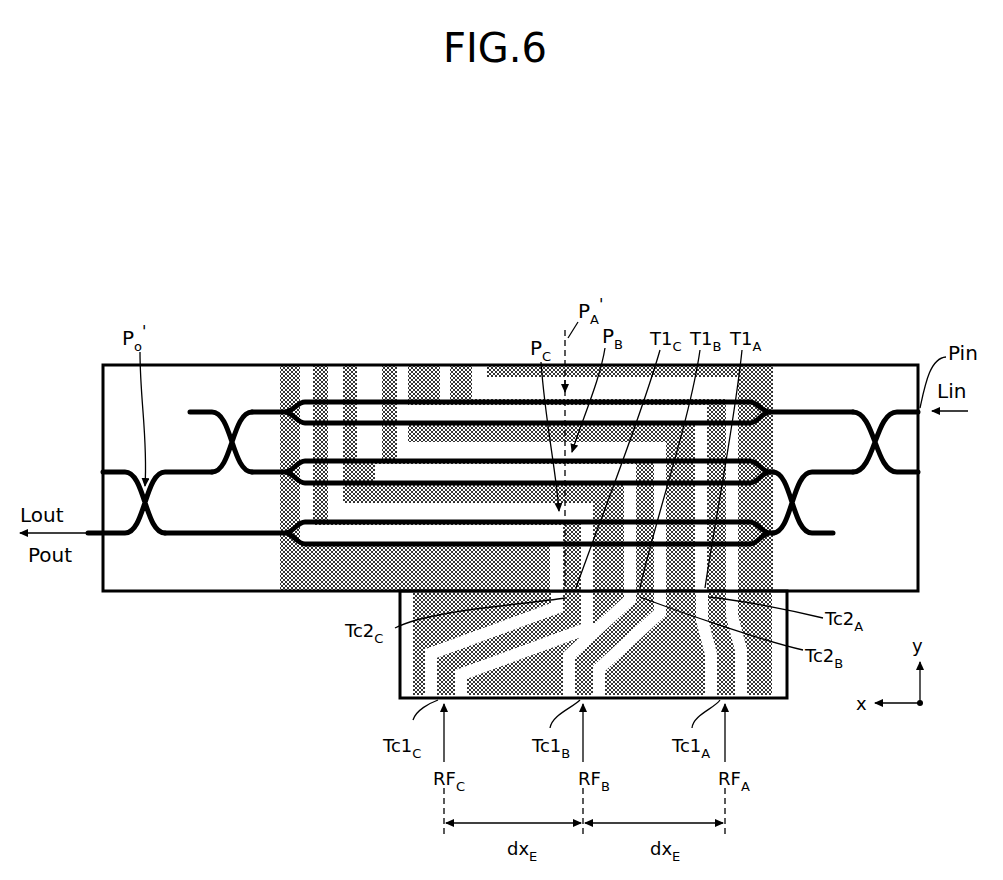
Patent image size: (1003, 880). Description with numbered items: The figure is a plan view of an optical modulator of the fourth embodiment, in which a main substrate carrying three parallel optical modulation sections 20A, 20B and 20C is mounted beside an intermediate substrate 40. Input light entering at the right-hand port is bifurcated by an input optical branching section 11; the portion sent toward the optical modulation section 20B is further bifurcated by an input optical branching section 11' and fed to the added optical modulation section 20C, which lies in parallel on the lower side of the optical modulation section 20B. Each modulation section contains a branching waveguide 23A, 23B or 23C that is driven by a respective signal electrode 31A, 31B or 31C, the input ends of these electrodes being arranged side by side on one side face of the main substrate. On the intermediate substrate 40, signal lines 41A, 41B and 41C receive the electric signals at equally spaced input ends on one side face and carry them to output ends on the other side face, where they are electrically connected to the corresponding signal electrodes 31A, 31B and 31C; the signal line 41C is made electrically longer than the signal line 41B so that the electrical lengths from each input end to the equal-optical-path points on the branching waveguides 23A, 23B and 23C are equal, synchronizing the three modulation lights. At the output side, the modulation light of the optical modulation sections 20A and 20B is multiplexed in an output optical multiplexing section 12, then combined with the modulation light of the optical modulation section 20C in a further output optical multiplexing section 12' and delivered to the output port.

The input optical branching section 11 is at (885, 399).
The input optical branching section 11' is at (813, 429).
The output optical multiplexing section 12 is at (221, 519).
The output optical multiplexing section 12' is at (150, 549).
The optical modulation section 20A is at (304, 388).
The optical modulation section 20B is at (291, 447).
The optical modulation section 20C is at (294, 570).
The branching waveguide 23A is at (398, 395).
The branching waveguide 23B is at (375, 457).
The branching waveguide 23C is at (338, 516).
The signal electrode 31A is at (487, 393).
The signal electrode 31B is at (462, 453).
The signal electrode 31C is at (423, 513).
The intermediate substrate 40 is at (400, 688).
The signal line 41A is at (735, 672).
The signal line 41B is at (590, 665).
The signal line 41C is at (463, 657).